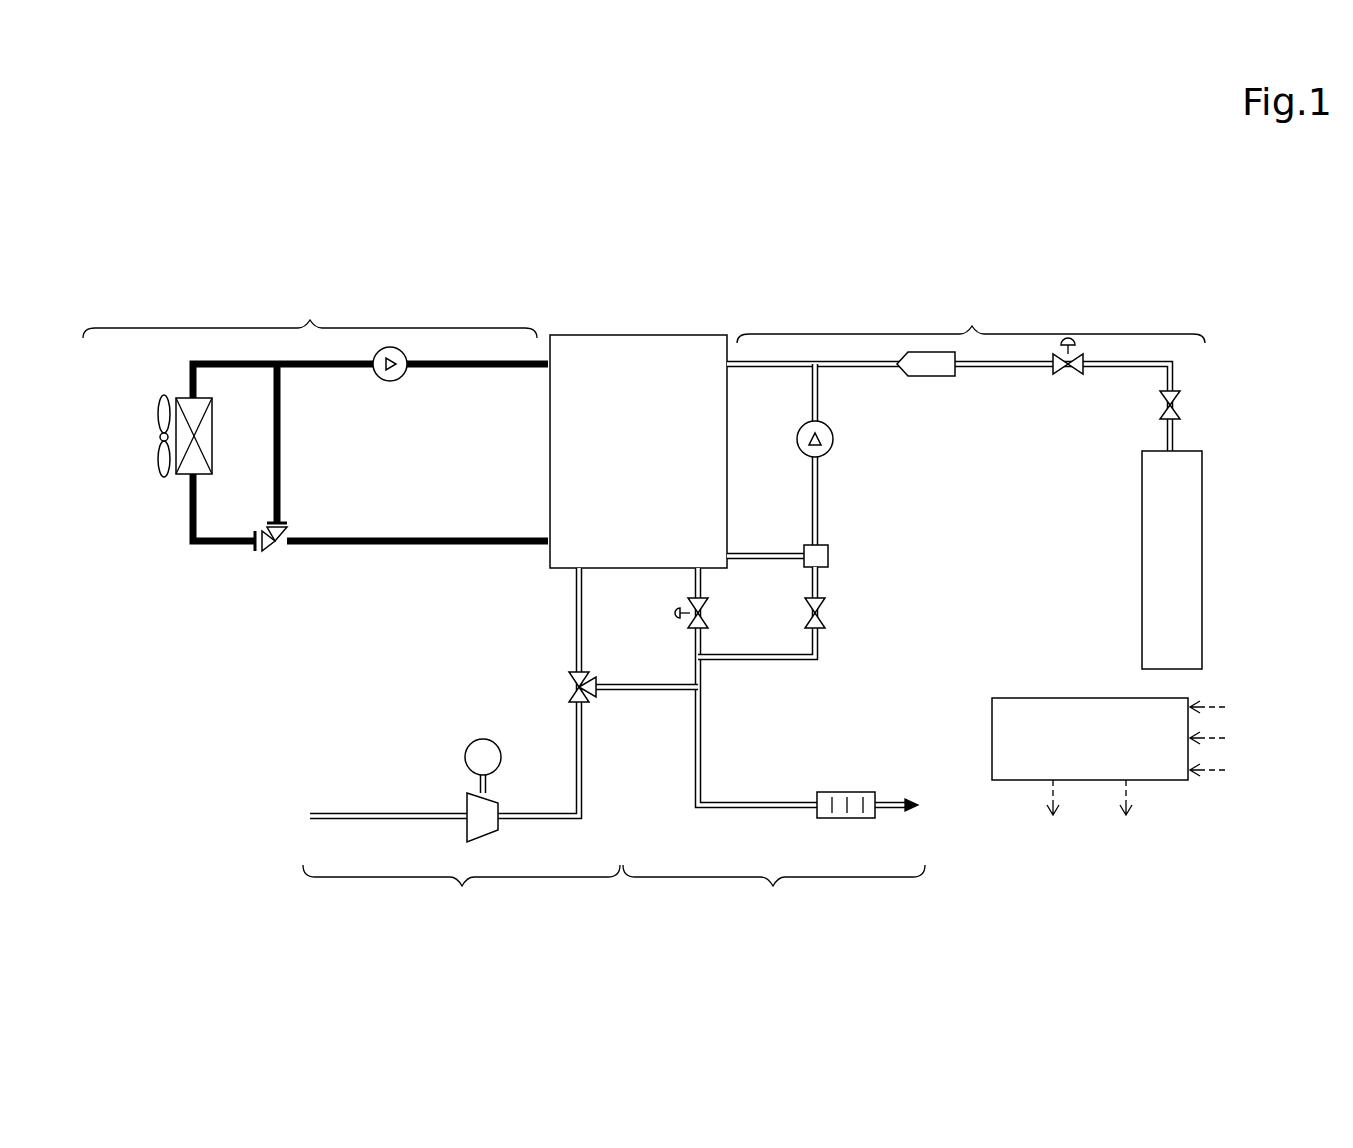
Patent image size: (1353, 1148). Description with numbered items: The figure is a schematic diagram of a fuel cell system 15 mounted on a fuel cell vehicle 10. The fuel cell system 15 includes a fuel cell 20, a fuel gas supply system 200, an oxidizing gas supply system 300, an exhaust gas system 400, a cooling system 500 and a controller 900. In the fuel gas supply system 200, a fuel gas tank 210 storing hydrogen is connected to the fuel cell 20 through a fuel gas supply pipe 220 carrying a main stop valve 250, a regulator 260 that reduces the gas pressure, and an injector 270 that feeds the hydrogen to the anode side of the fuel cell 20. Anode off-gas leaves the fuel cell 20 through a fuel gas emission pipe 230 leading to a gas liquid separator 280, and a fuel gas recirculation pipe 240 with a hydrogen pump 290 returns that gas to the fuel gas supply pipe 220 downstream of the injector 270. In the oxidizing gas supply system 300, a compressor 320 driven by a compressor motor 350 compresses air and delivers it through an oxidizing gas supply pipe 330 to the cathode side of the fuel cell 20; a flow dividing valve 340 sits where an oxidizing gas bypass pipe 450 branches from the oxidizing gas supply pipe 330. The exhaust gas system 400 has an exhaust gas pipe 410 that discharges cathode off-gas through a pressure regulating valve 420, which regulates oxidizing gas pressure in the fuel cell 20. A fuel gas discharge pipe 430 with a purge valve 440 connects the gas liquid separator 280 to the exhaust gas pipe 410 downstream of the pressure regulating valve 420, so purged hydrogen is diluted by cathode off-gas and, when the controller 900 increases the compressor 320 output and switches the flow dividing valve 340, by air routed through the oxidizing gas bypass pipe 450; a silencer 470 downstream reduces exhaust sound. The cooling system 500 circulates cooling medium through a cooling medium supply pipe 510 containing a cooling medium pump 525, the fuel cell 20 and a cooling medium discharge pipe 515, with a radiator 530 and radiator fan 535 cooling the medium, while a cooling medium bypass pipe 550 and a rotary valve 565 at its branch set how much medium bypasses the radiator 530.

The fuel cell vehicle 10 is at (1205, 212).
The fuel cell system 15 is at (240, 267).
The fuel cell 20 is at (585, 335).
The fuel gas supply system 200 is at (971, 322).
The fuel gas tank 210 is at (1202, 470).
The fuel gas supply pipe 220 is at (987, 370).
The fuel gas emission pipe 230 is at (767, 550).
The fuel gas recirculation pipe 240 is at (820, 392).
The main stop valve 250 is at (1180, 410).
The regulator 260 is at (1068, 376).
The injector 270 is at (932, 377).
The gas liquid separator 280 is at (828, 557).
The hydrogen pump 290 is at (833, 445).
The oxidizing gas supply system 300 is at (461, 892).
The compressor 320 is at (466, 830).
The oxidizing gas supply pipe 330 is at (530, 820).
The flow dividing valve 340 is at (588, 680).
The compressor motor 350 is at (502, 757).
The exhaust gas system 400 is at (774, 892).
The exhaust gas pipe 410 is at (755, 802).
The pressure regulating valve 420 is at (708, 612).
The fuel gas discharge pipe 430 is at (778, 660).
The purge valve 440 is at (825, 614).
The oxidizing gas bypass pipe 450 is at (643, 692).
The silencer 470 is at (860, 792).
The cooling system 500 is at (310, 313).
The cooling medium supply pipe 510 is at (493, 368).
The cooling medium discharge pipe 515 is at (493, 540).
The cooling medium pump 525 is at (390, 381).
The radiator 530 is at (212, 455).
The radiator fan 535 is at (158, 437).
The cooling medium bypass pipe 550 is at (281, 449).
The rotary valve 565 is at (285, 530).
The controller 900 is at (1090, 698).